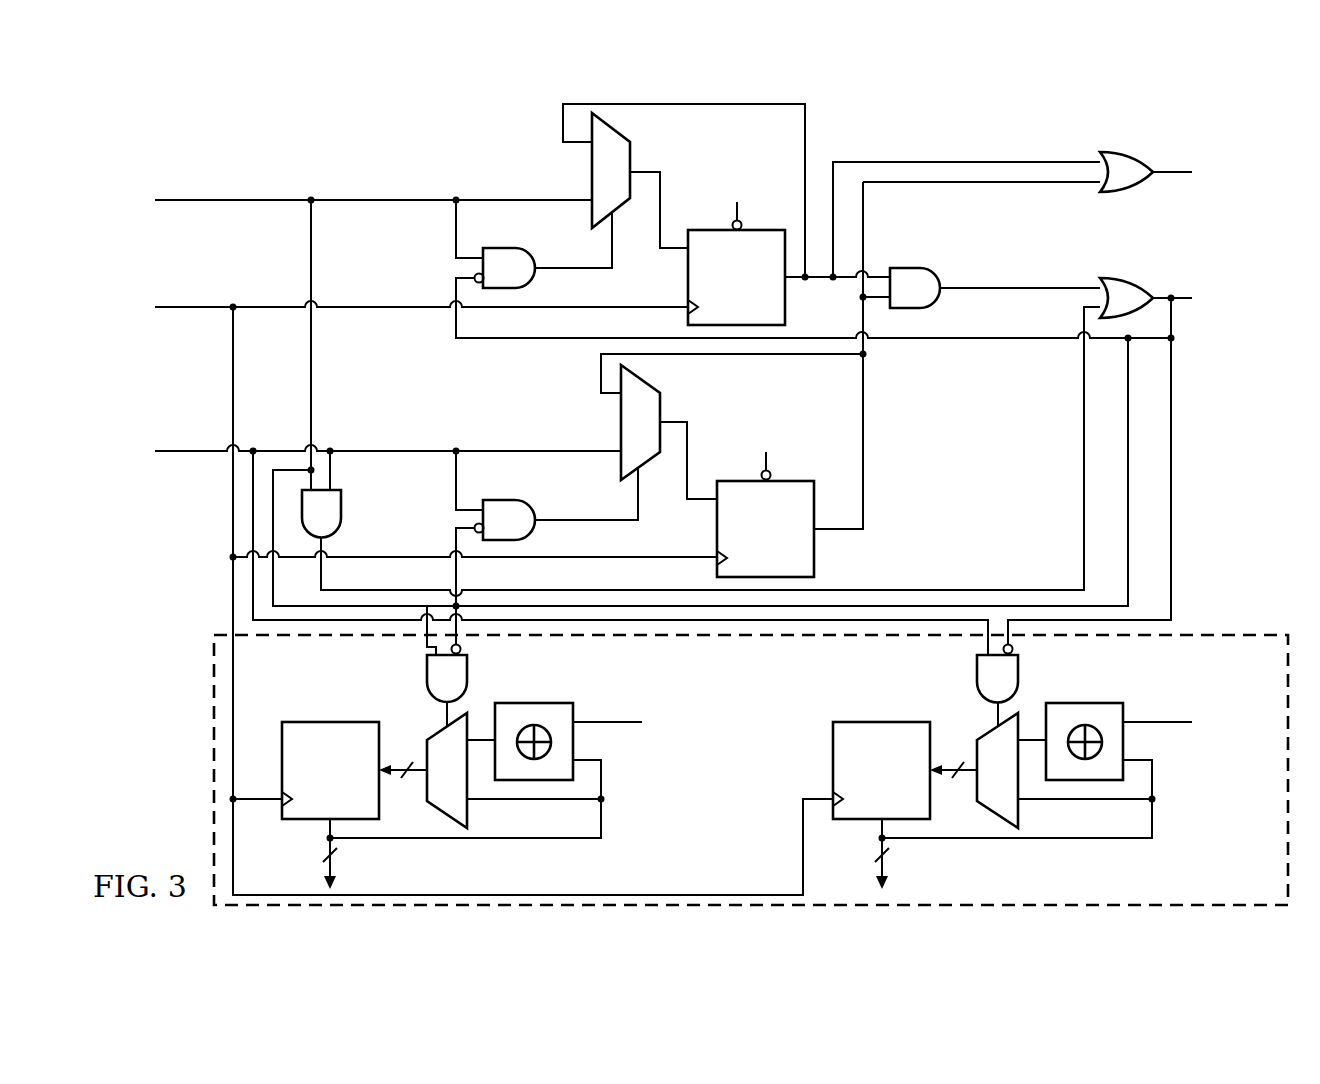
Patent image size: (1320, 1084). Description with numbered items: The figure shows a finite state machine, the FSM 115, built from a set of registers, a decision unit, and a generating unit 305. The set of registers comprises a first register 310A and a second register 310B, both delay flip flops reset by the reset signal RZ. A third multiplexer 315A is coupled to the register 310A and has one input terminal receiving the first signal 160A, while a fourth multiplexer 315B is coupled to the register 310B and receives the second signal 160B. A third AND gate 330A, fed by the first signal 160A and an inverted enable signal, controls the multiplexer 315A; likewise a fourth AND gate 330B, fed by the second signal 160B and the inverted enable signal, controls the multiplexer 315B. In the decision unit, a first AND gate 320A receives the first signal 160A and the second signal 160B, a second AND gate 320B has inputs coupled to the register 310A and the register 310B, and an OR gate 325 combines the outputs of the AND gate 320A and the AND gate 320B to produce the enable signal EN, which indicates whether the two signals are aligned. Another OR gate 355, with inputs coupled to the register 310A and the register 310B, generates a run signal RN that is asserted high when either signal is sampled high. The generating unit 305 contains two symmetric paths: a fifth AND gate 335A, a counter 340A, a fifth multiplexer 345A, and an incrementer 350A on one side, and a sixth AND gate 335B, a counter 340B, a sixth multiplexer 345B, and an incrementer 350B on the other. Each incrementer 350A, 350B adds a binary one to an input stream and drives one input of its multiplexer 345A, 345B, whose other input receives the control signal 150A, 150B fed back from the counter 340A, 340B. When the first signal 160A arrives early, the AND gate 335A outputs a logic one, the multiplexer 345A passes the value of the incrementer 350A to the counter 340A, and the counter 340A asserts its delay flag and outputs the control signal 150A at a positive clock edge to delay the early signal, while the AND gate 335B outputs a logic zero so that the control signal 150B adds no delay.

The FSM 115 is at (337, 155).
The first signal 160A is at (195, 200).
The second signal 160B is at (195, 451).
The generating unit 305 is at (204, 788).
The first register 310A is at (736, 252).
The second register 310B is at (765, 503).
The third multiplexer 315A is at (633, 160).
The fourth multiplexer 315B is at (663, 412).
The first AND gate 320A is at (343, 511).
The second AND gate 320B is at (906, 268).
The OR gate 325 is at (1119, 278).
The third AND gate 330A is at (505, 248).
The fourth AND gate 330B is at (505, 500).
The fifth AND gate 335A is at (427, 675).
The sixth AND gate 335B is at (977, 675).
The counter 340A is at (354, 770).
The counter 340B is at (905, 770).
The fifth multiplexer 345A is at (469, 812).
The sixth multiplexer 345B is at (1020, 812).
The incrementer 350A is at (528, 703).
The incrementer 350B is at (1080, 703).
The OR gate 355 is at (1119, 152).
The control signal 150A is at (339, 863).
The control signal 150B is at (889, 863).